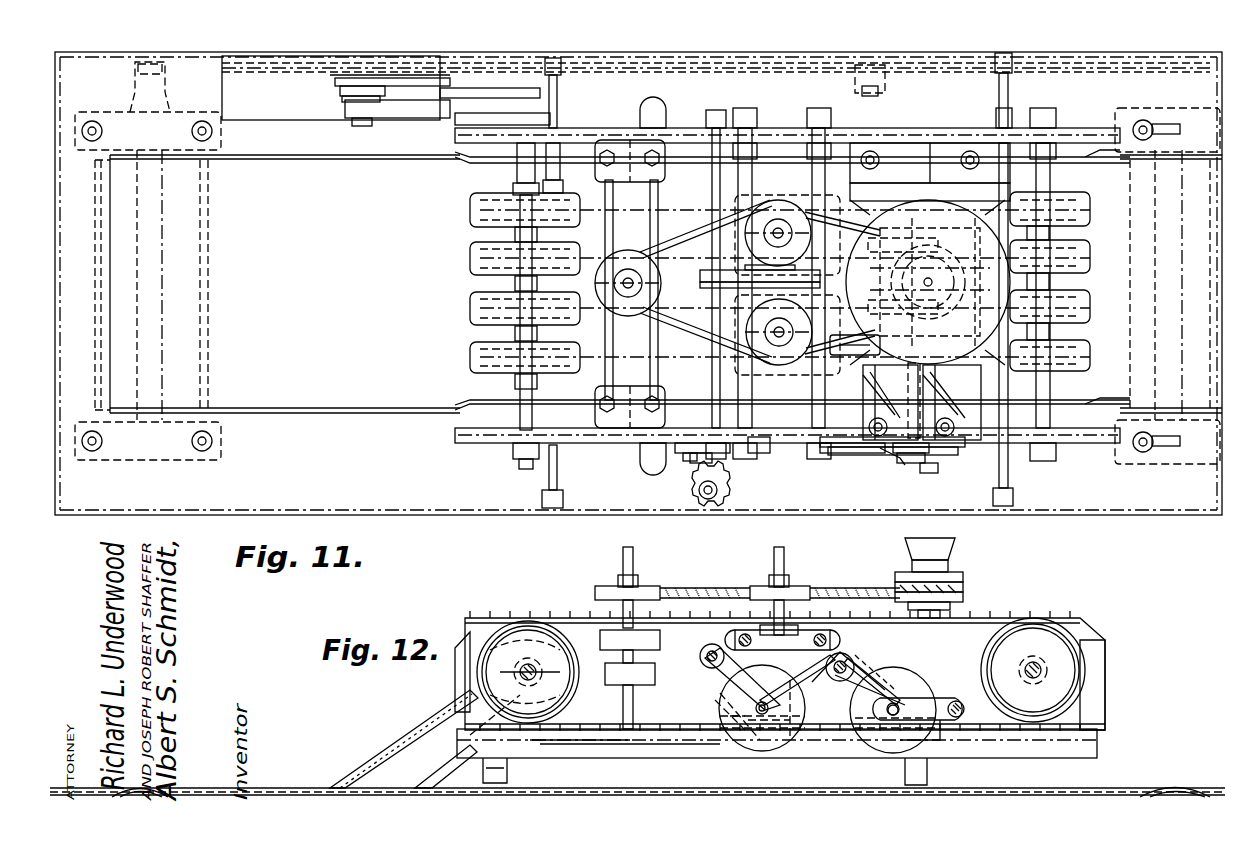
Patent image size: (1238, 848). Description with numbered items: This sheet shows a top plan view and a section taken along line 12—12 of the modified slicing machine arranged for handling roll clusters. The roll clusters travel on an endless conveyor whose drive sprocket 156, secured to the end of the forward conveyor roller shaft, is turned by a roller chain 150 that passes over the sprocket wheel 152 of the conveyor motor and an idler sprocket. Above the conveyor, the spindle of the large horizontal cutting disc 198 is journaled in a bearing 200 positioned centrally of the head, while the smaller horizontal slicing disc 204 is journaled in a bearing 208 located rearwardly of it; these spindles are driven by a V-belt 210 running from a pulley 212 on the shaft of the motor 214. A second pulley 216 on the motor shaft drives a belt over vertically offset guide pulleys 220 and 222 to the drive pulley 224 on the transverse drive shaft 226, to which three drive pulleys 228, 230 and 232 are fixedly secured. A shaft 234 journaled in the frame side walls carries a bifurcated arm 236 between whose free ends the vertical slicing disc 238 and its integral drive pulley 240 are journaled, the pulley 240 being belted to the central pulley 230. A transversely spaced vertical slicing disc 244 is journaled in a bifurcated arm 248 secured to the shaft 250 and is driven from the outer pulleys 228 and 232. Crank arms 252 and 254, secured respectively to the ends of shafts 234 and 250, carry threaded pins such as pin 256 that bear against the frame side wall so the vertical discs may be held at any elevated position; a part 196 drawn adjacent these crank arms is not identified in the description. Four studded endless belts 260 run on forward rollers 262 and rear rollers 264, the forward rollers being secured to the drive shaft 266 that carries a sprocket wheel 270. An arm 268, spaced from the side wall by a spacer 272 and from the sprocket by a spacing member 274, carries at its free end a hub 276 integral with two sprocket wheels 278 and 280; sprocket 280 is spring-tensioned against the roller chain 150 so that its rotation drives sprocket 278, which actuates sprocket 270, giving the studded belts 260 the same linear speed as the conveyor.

In FIG. 11, the section line 12 is at (130, 285).
In FIG. 11, the roller chain 150 is at (785, 72).
In FIG. 11, the sprocket wheel 152 is at (888, 78).
In FIG. 11, the sprocket 156 is at (128, 72).
In FIG. 11, the sprocket 196 is at (688, 494).
In FIG. 12, the horizontal cutting disc 198 is at (606, 745).
In FIG. 12, the bearing 200 is at (640, 655).
In FIG. 12, the slicing disc 204 is at (1048, 640).
In FIG. 12, the bearing 208 is at (822, 645).
In FIG. 12, the V-belt 210 is at (708, 580).
In FIG. 12, the pulley 212 is at (965, 588).
In FIG. 11, the motor 214 is at (940, 170).
In FIG. 12, the pulley 216 is at (958, 575).
In FIG. 11, the guide pulley 220 is at (882, 395).
In FIG. 11, the guide pulley 222 is at (940, 422).
In FIG. 11, the drive pulley 224 is at (845, 453).
In FIG. 11, the drive shaft 226 is at (858, 350).
In FIG. 12, the drive shaft 226 is at (848, 660).
In FIG. 11, the drive pulley 228 is at (898, 312).
In FIG. 11, the drive pulley 230 is at (900, 258).
In FIG. 12, the drive pulley 230 is at (858, 680).
In FIG. 11, the drive pulley 232 is at (935, 200).
In FIG. 11, the shaft 234 is at (730, 420).
In FIG. 12, the shaft 234 is at (712, 672).
In FIG. 11, the bifurcated arm 236 is at (700, 272).
In FIG. 12, the bifurcated arm 236 is at (722, 703).
In FIG. 12, the vertical slicing disc 238 is at (728, 714).
In FIG. 12, the drive pulley 240 is at (748, 745).
In FIG. 12, the vertical slicing disc 244 is at (892, 738).
In FIG. 12, the bifurcated arm 248 is at (938, 700).
In FIG. 11, the shaft 250 is at (925, 400).
In FIG. 12, the shaft 250 is at (960, 725).
In FIG. 11, the crank arm 252 is at (684, 450).
In FIG. 11, the crank arm 254 is at (915, 460).
In FIG. 11, the threaded pin 256 is at (690, 457).
In FIG. 11, the studded endless belt 260 is at (470, 200).
In FIG. 12, the studded endless belt 260 is at (500, 622).
In FIG. 11, the roller 262 is at (470, 215).
In FIG. 12, the roller 262 is at (497, 628).
In FIG. 11, the roller 264 is at (1090, 205).
In FIG. 11, the drive shaft 266 is at (525, 392).
In FIG. 12, the drive shaft 266 is at (560, 686).
In FIG. 11, the arm 268 is at (408, 106).
In FIG. 11, the sprocket wheel 270 is at (556, 80).
In FIG. 12, the sprocket wheel 270 is at (555, 700).
In FIG. 11, the spacer 272 is at (552, 118).
In FIG. 11, the spacing member 274 is at (548, 92).
In FIG. 11, the hub 276 is at (344, 100).
In FIG. 11, the sprocket wheel 278 is at (342, 88).
In FIG. 11, the sprocket wheel 280 is at (350, 76).